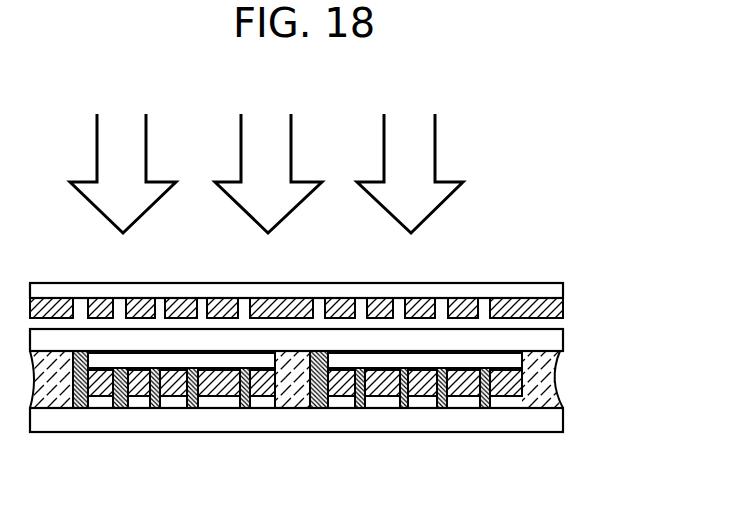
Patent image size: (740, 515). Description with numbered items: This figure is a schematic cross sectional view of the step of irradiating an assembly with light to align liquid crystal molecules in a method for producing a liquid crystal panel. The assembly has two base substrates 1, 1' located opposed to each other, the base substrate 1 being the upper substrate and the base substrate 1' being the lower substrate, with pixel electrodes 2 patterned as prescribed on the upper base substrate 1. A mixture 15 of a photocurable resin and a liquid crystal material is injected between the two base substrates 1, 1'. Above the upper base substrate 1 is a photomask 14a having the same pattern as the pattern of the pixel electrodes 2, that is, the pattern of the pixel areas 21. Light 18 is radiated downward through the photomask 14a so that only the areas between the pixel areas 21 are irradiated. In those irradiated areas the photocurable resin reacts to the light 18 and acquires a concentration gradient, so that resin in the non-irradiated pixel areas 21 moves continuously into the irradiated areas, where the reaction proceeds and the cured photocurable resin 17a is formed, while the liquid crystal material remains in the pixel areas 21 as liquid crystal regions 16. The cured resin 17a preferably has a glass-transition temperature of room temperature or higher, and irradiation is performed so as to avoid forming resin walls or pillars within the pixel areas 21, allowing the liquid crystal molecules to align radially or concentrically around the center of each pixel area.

The light 18 is at (425, 159).
The photomask 14a is at (553, 290).
The base substrate 1 is at (336, 323).
The base substrate 1' is at (338, 407).
The mixture 15 is at (553, 383).
The pixel areas 21 is at (100, 402).
The pixel electrodes 2 is at (138, 360).
The liquid crystal region 16 is at (463, 392).
The cured photocurable resin 17a is at (495, 395).